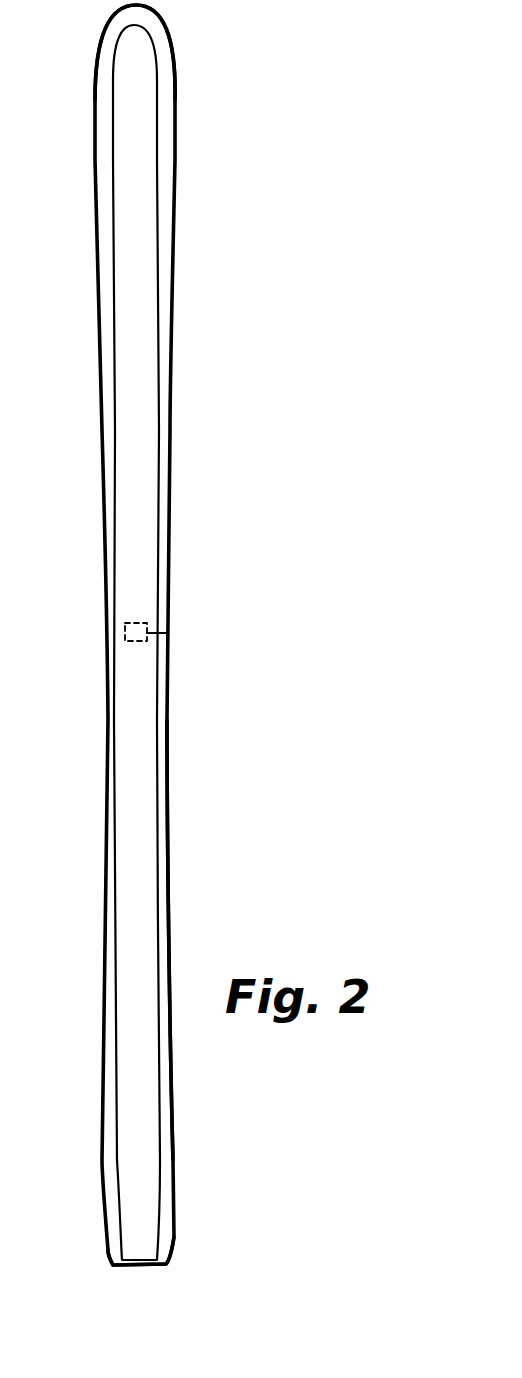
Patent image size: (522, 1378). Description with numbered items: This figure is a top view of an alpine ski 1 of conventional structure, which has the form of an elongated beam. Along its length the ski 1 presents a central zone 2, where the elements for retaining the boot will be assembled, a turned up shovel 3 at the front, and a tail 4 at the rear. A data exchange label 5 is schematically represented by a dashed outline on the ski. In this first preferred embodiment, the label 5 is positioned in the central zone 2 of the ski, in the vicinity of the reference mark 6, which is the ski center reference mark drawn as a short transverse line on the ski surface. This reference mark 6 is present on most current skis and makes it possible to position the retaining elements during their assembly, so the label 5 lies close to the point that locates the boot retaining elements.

The ski 1 is at (181, 498).
The central zone 2 is at (170, 679).
The shovel 3 is at (167, 40).
The tail 4 is at (175, 1237).
The data exchange label 5 is at (124, 645).
The reference mark 6 is at (168, 633).